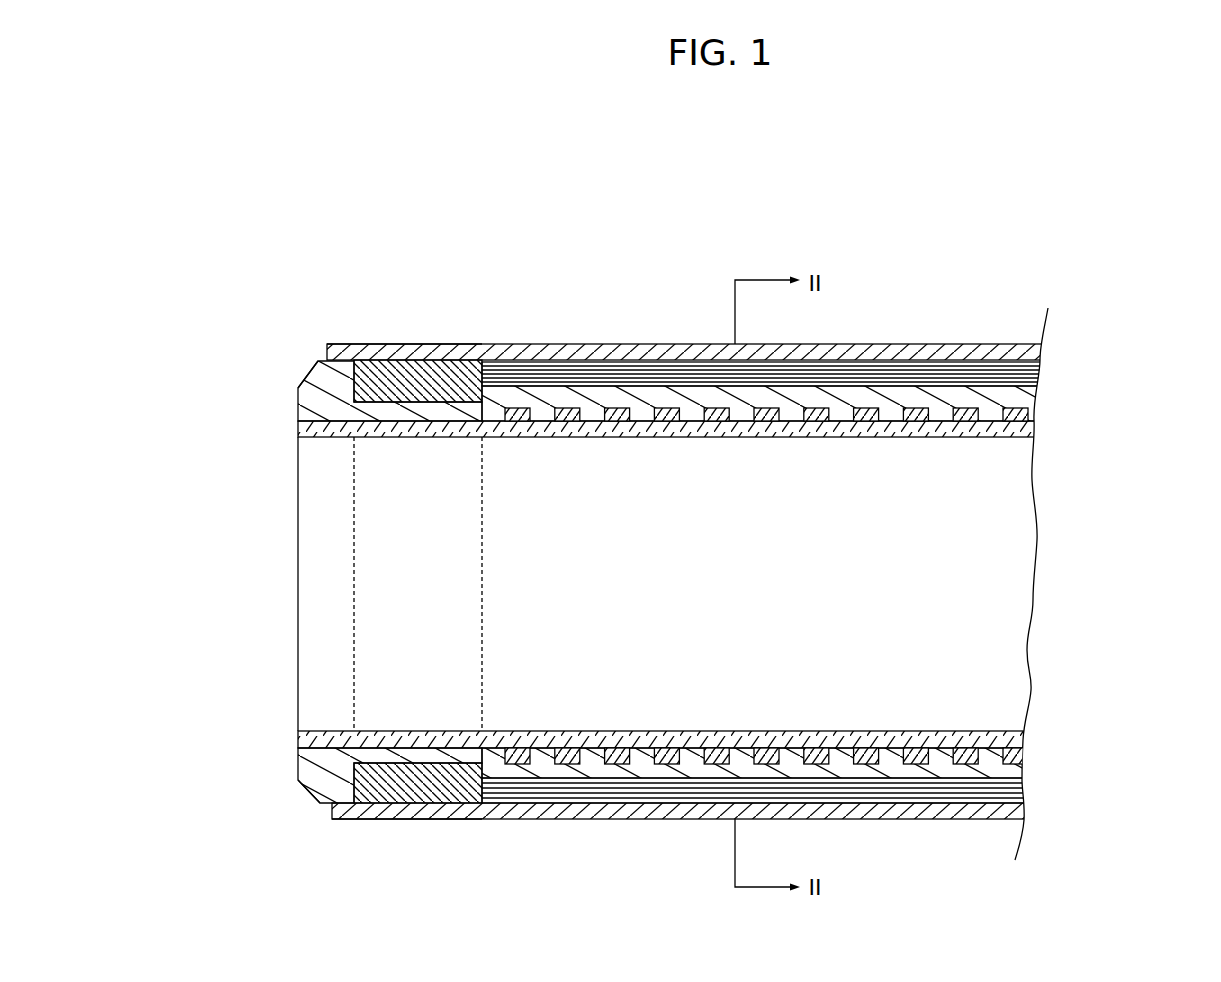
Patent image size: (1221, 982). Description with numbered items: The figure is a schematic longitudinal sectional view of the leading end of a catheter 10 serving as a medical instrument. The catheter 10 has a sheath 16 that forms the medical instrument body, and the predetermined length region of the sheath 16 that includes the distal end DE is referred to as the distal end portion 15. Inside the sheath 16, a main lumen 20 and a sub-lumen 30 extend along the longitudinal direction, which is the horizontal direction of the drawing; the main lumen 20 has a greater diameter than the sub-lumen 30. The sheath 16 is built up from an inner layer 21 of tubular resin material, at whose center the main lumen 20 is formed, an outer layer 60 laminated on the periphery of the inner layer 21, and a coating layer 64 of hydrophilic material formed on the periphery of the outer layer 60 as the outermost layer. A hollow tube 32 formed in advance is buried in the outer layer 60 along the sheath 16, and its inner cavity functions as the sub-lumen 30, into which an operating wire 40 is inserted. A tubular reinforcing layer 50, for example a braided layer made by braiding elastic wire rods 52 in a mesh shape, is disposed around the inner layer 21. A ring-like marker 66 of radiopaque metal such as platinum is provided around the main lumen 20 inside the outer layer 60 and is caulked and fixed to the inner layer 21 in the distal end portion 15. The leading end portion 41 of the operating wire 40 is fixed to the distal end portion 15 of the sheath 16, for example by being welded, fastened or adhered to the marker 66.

The catheter 10 is at (982, 206).
The distal end portion 15 is at (545, 312).
The sheath 16 is at (747, 582).
The main lumen 20 is at (327, 568).
The inner layer 21 is at (1000, 437).
The sub-lumen 30 is at (637, 372).
The hollow tube 32 is at (615, 361).
The operating wire 40 is at (965, 362).
The leading end portion 41 is at (490, 344).
The reinforcing layer 50 is at (878, 538).
The wire rod 52 is at (715, 412).
The outer layer 60 is at (1027, 393).
The coating layer 64 is at (876, 344).
The marker 66 is at (378, 344).
The distal end DE is at (298, 482).